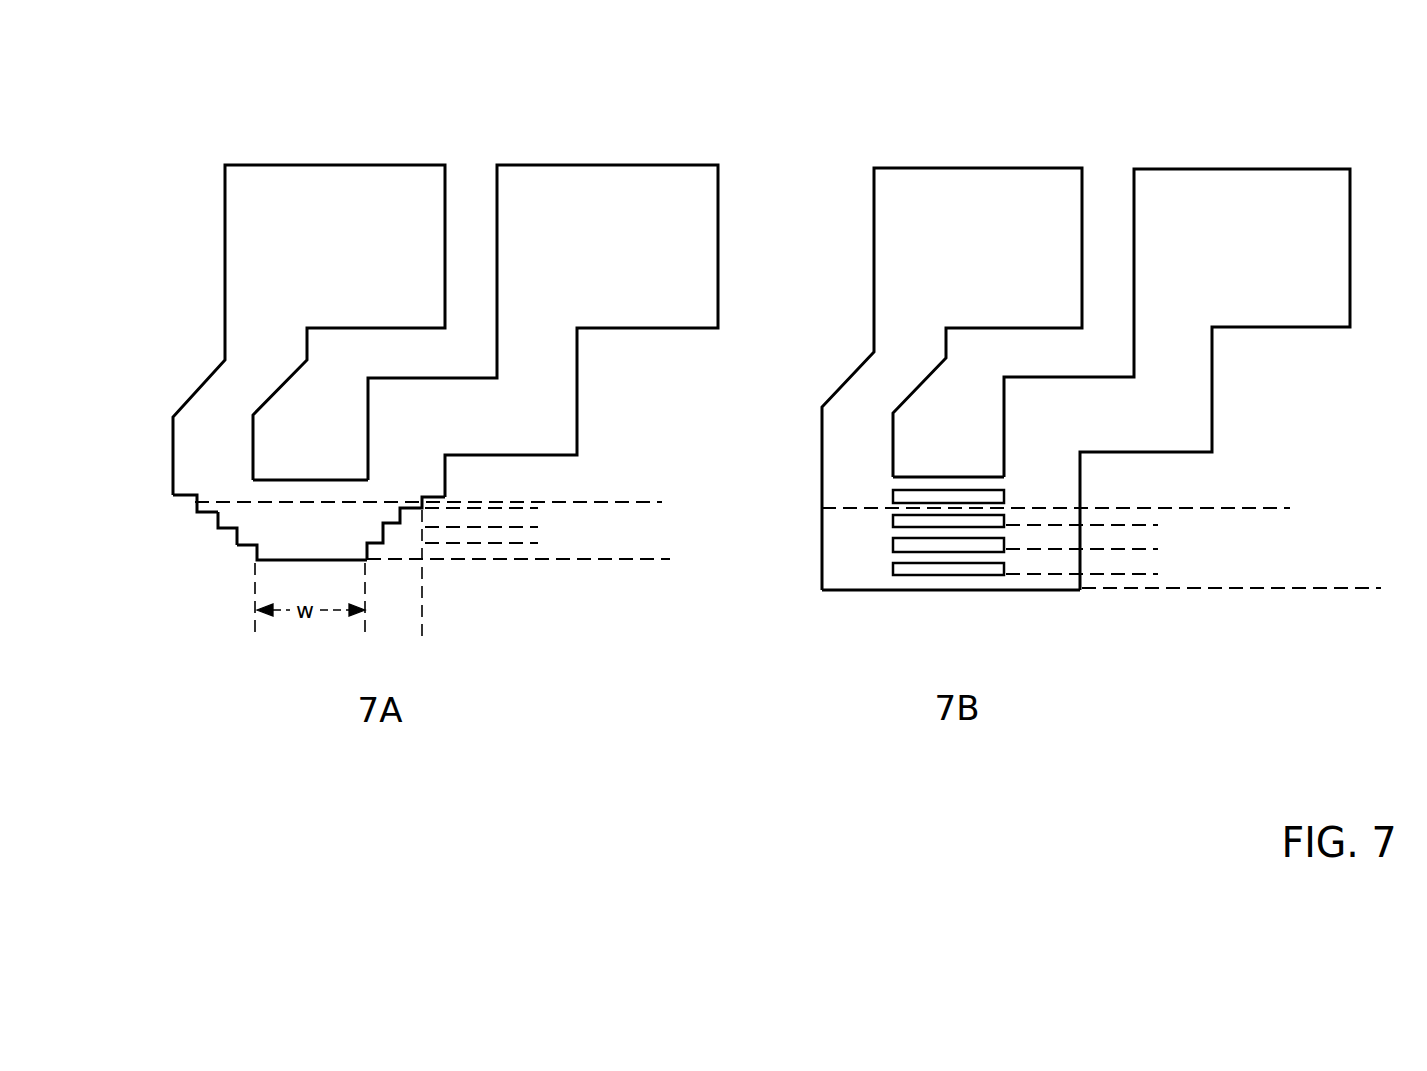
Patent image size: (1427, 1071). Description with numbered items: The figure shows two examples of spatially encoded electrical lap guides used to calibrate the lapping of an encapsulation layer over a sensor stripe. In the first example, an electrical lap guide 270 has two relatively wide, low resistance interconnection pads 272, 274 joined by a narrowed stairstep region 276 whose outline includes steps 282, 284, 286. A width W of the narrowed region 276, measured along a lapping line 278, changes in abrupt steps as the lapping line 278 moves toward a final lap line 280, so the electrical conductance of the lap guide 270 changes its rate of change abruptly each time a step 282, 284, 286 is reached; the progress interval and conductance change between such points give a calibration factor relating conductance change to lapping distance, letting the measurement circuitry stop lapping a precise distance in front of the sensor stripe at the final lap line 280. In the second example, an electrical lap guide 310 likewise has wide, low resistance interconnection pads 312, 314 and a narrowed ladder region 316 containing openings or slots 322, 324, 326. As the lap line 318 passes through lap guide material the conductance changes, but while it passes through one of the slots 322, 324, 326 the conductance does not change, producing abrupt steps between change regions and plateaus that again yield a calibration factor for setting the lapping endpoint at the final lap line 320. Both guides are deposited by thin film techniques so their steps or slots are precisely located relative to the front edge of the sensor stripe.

The electrical lap guide 270 is at (413, 83).
The interconnection pad 272 is at (335, 259).
The interconnection pad 274 is at (621, 259).
The narrowed stairstep region 276 is at (302, 450).
The lapping line 278 is at (532, 559).
The final lap line 280 is at (558, 502).
The step 282 is at (248, 550).
The step 284 is at (229, 535).
The step 286 is at (204, 506).
The electrical lap guide 310 is at (995, 88).
The interconnection pad 312 is at (992, 260).
The interconnection pad 314 is at (1243, 263).
The narrowed ladder region 316 is at (947, 450).
The lap line 318 is at (1240, 590).
The final lap line 320 is at (1257, 508).
The slot 322 is at (915, 563).
The slot 324 is at (910, 543).
The slot 326 is at (910, 513).